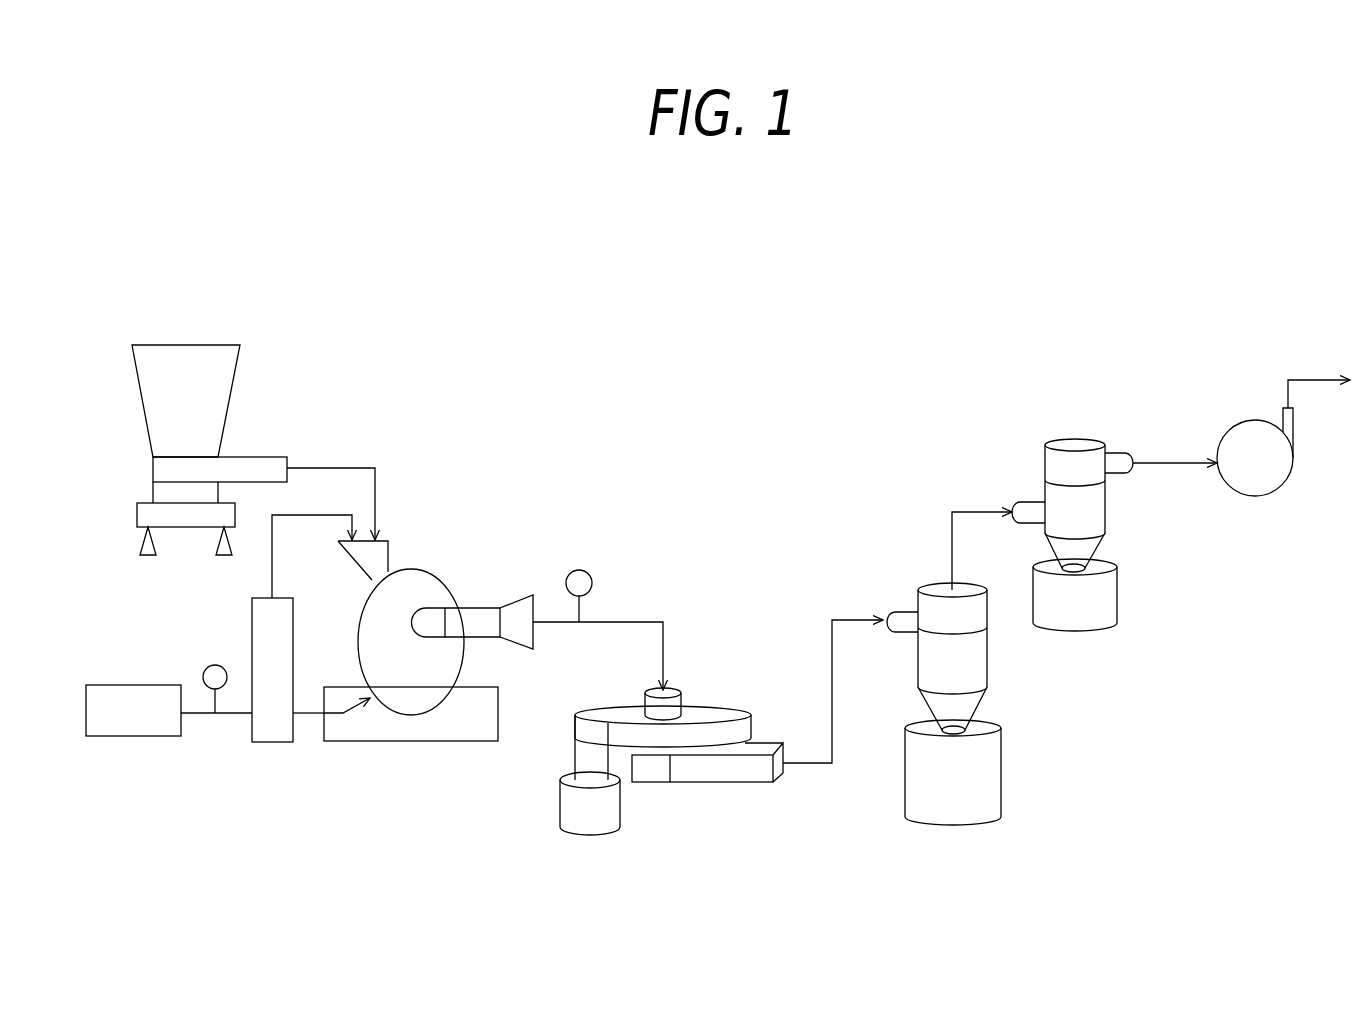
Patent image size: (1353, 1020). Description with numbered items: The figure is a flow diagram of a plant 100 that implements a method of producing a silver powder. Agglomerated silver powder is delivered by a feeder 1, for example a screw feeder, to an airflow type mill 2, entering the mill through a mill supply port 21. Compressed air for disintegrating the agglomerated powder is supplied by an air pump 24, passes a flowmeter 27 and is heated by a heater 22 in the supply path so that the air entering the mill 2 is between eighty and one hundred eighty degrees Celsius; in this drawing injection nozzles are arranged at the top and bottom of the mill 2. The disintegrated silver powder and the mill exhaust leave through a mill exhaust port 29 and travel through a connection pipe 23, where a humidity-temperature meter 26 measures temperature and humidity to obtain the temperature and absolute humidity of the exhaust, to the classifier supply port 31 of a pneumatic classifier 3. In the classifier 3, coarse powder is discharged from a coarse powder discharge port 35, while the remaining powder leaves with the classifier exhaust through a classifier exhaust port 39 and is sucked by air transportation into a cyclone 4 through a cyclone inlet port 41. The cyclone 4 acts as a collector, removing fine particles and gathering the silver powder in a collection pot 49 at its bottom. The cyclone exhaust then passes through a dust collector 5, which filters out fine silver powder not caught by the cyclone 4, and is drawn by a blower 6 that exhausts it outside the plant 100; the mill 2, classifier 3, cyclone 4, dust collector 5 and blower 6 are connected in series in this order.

The plant 100 is at (563, 288).
The feeder 1 is at (256, 396).
The airflow type mill 2 is at (447, 552).
The mill supply port 21 is at (355, 553).
The heater 22 is at (274, 745).
The connection pipe 23 is at (613, 617).
The air pump 24 is at (136, 740).
The humidity-temperature meter 26 is at (590, 573).
The flowmeter 27 is at (206, 668).
The mill exhaust port 29 is at (515, 606).
The pneumatic classifier 3 is at (707, 677).
The classifier supply port 31 is at (645, 688).
The coarse powder discharge port 35 is at (565, 806).
The classifier exhaust port 39 is at (733, 777).
The cyclone 4 is at (928, 562).
The cyclone inlet port 41 is at (898, 611).
The collection pot 49 is at (978, 778).
The dust collector 5 is at (1040, 432).
The blower 6 is at (1225, 410).